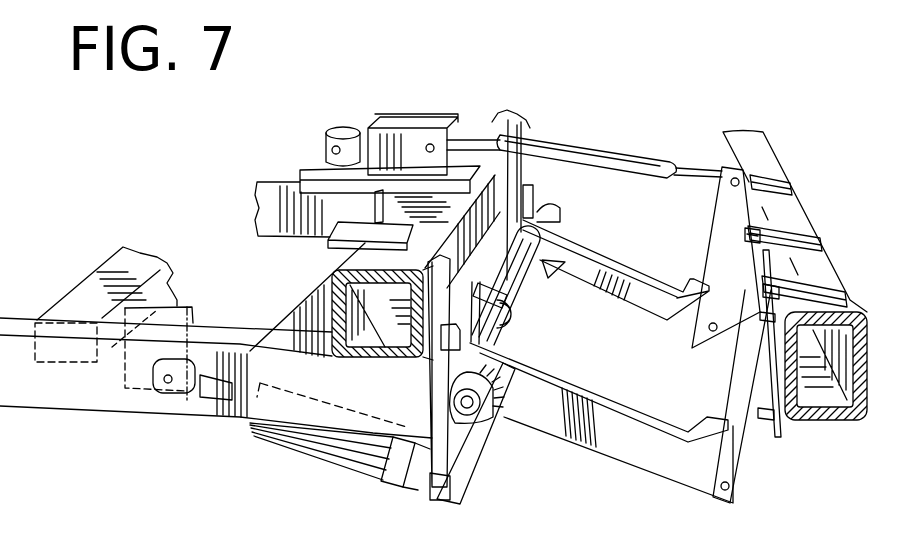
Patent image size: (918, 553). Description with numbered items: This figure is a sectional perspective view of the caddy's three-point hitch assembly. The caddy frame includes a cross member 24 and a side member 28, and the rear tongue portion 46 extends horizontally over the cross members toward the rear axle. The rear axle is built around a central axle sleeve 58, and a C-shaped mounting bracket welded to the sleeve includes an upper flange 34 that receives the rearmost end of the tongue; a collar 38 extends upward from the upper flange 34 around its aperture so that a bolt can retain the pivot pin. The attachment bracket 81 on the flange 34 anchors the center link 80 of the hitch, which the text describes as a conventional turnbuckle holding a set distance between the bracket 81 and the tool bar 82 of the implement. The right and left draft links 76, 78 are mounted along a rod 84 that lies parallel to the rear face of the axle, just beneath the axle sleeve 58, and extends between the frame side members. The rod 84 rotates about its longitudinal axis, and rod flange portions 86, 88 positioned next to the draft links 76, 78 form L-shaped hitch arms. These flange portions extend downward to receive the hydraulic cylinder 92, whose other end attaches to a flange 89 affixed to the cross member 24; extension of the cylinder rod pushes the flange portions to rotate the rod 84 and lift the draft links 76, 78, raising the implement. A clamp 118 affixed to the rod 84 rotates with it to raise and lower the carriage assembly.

The cross member 24 is at (97, 293).
The side member 28 is at (110, 380).
The upper flange 34 is at (306, 168).
The collar 38 is at (318, 165).
The rear tongue portion 46 is at (282, 178).
The axle sleeve 58 is at (505, 122).
The right draft link 76 is at (580, 267).
The left draft link 78 is at (645, 443).
The hydraulic cylinder 80 is at (607, 157).
The attachment bracket 81 is at (403, 113).
The tool bar 82 is at (757, 157).
The rod 84 is at (530, 305).
The rod flange portion 86 is at (537, 322).
The rod flange portion 88 is at (463, 458).
The flange 89 is at (193, 310).
The hydraulic cylinder 92 is at (360, 450).
The clamp 118 is at (513, 345).